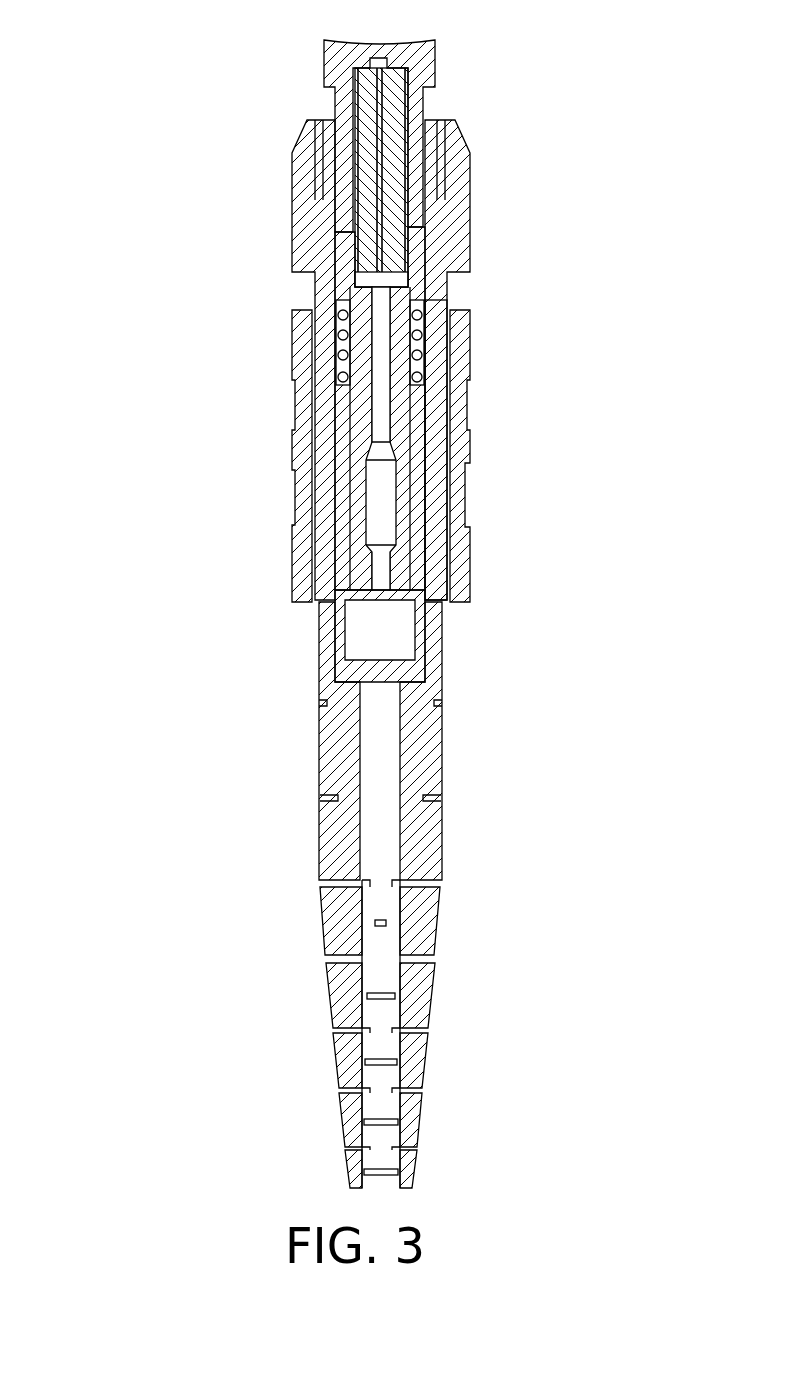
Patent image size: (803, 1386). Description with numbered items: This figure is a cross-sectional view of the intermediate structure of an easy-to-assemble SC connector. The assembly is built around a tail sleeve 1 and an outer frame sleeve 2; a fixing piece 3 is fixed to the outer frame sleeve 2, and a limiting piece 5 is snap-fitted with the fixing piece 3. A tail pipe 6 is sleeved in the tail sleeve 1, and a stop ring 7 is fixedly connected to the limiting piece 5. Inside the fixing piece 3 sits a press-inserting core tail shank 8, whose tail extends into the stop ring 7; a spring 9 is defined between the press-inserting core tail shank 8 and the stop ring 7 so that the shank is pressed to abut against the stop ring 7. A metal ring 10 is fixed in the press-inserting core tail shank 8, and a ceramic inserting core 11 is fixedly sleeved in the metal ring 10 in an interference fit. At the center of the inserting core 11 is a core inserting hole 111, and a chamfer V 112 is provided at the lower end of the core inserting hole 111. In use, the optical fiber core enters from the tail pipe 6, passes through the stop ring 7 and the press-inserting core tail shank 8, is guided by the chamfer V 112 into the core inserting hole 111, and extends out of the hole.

The tail sleeve 1 is at (333, 847).
The outer frame sleeve 2 is at (302, 530).
The fixing piece 3 is at (325, 290).
The limiting piece 5 is at (435, 435).
The tail pipe 6 is at (338, 588).
The stop ring 7 is at (340, 547).
The press-inserting core tail shank 8 is at (398, 500).
The spring 9 is at (468, 328).
The metal ring 10 is at (432, 250).
The ceramic inserting core 11 is at (398, 185).
The core inserting hole 111 is at (392, 188).
The chamfer V 112 is at (380, 277).